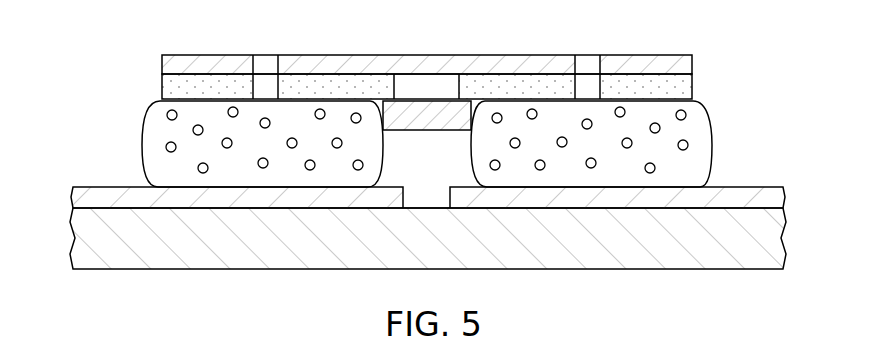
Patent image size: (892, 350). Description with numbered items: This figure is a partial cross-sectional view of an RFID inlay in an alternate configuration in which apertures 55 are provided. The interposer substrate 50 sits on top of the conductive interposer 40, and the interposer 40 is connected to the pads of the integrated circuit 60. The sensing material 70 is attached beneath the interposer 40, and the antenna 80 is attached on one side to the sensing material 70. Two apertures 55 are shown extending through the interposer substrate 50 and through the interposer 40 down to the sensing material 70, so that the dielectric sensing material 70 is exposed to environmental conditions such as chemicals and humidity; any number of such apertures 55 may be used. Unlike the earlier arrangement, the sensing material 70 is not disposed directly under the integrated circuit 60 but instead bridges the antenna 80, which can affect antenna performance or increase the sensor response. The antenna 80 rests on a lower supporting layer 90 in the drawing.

The conductive interposer 40 is at (168, 88).
The interposer substrate 50 is at (351, 65).
The apertures 55 is at (266, 60).
The integrated circuit 60 is at (423, 110).
The sensing material 70 is at (145, 143).
The antenna 80 is at (73, 199).
The substrate 90 is at (73, 247).